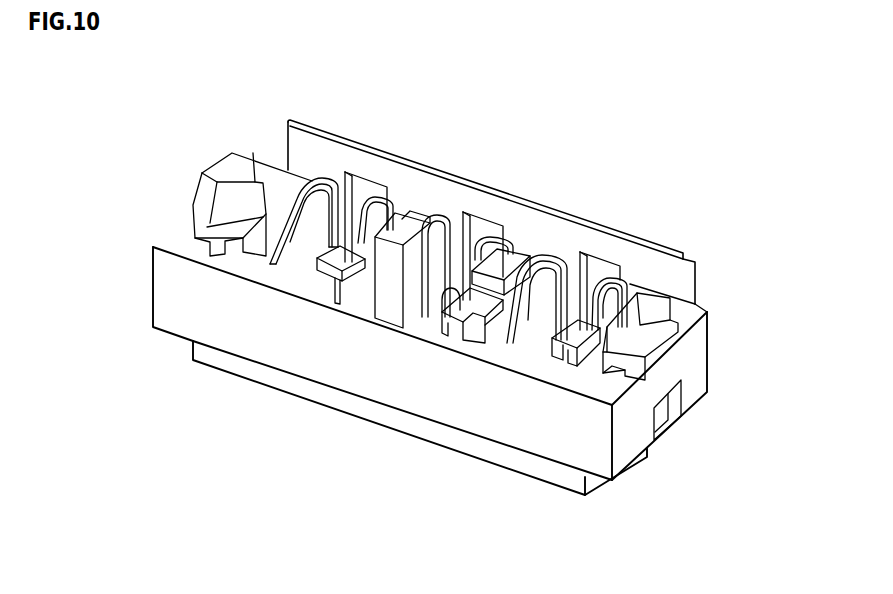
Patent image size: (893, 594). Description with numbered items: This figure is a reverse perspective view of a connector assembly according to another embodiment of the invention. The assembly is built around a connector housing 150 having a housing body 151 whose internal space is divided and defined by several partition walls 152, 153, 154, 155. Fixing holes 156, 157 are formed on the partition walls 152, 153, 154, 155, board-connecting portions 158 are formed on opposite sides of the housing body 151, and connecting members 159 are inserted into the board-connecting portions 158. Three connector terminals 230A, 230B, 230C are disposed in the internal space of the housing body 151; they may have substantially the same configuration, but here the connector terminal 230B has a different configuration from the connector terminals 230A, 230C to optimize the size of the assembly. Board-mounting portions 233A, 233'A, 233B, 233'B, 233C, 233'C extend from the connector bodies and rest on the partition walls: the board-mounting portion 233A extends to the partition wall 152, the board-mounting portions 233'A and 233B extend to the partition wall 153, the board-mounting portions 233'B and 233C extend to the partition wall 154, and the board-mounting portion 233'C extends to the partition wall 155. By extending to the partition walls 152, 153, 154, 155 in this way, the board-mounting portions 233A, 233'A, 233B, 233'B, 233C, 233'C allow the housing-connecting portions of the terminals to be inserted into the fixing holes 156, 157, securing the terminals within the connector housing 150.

The connector housing 150 is at (150, 283).
The housing body 151 is at (165, 315).
The partition wall 152 is at (605, 323).
The partition wall 153 is at (480, 328).
The partition wall 154 is at (380, 257).
The partition wall 155 is at (265, 203).
The fixing hole 156 is at (530, 300).
The fixing hole 157 is at (443, 318).
The board-connecting portion 158 is at (698, 354).
The connecting member 159 is at (688, 300).
The connector terminal 230A is at (595, 268).
The connector terminal 230B is at (477, 226).
The connector terminal 230C is at (357, 191).
The board-mounting portion 233A is at (563, 373).
The board-mounting portion 233B is at (513, 257).
The board-mounting portion 233C is at (332, 273).
The board-mounting portion 233'A is at (440, 365).
The board-mounting portion 233'B is at (431, 203).
The board-mounting portion 233'C is at (209, 218).